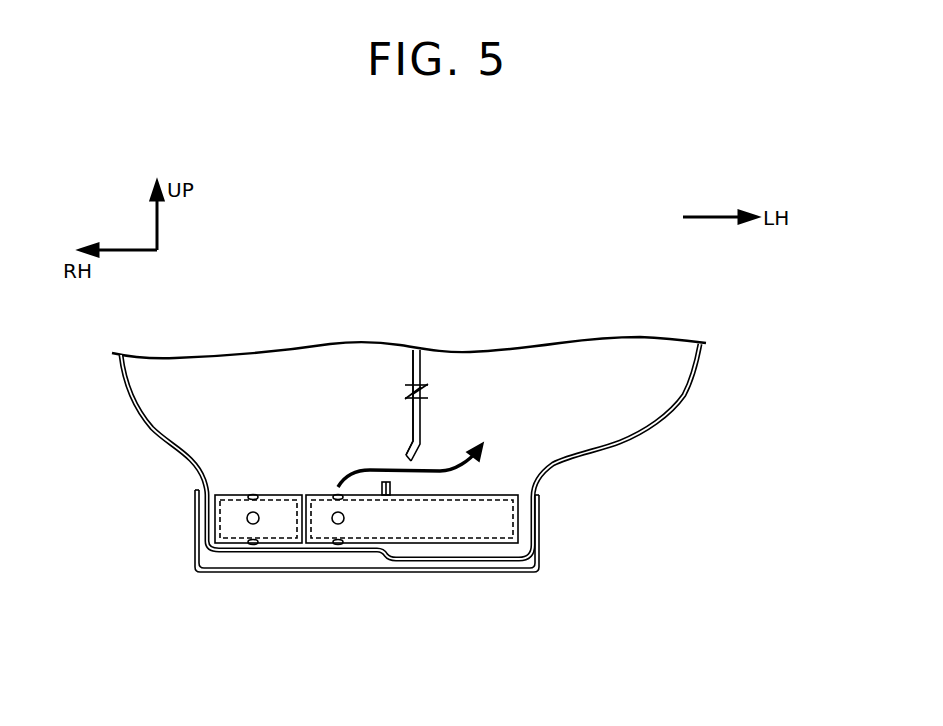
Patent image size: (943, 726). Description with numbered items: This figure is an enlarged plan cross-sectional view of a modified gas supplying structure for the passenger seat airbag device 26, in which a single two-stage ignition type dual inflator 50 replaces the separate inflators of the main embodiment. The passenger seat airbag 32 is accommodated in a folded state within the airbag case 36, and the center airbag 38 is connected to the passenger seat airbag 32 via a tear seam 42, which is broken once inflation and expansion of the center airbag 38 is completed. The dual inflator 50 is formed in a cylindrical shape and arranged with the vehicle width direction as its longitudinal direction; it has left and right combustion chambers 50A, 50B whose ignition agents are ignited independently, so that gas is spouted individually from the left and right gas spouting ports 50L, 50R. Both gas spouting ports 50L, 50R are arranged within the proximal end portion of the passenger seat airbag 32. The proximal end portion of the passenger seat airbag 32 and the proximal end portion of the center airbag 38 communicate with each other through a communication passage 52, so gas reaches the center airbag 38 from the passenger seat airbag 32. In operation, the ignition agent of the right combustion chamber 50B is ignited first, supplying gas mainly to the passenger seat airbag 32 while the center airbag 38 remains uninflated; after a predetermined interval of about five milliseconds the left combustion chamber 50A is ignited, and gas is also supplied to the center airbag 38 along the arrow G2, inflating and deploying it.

The passenger seat airbag device 26 is at (549, 590).
The passenger seat airbag 32 is at (165, 420).
The airbag case 36 is at (403, 573).
The center airbag 38 is at (655, 402).
The tear seam 42 is at (430, 390).
The dual inflator 50 is at (444, 548).
The left combustion chamber 50A is at (487, 512).
The right combustion chamber 50B is at (280, 512).
The right gas spouting port 50R is at (256, 523).
The left gas spouting port 50L is at (341, 523).
The communication passage 52 is at (400, 462).
The arrow G2 is at (420, 449).